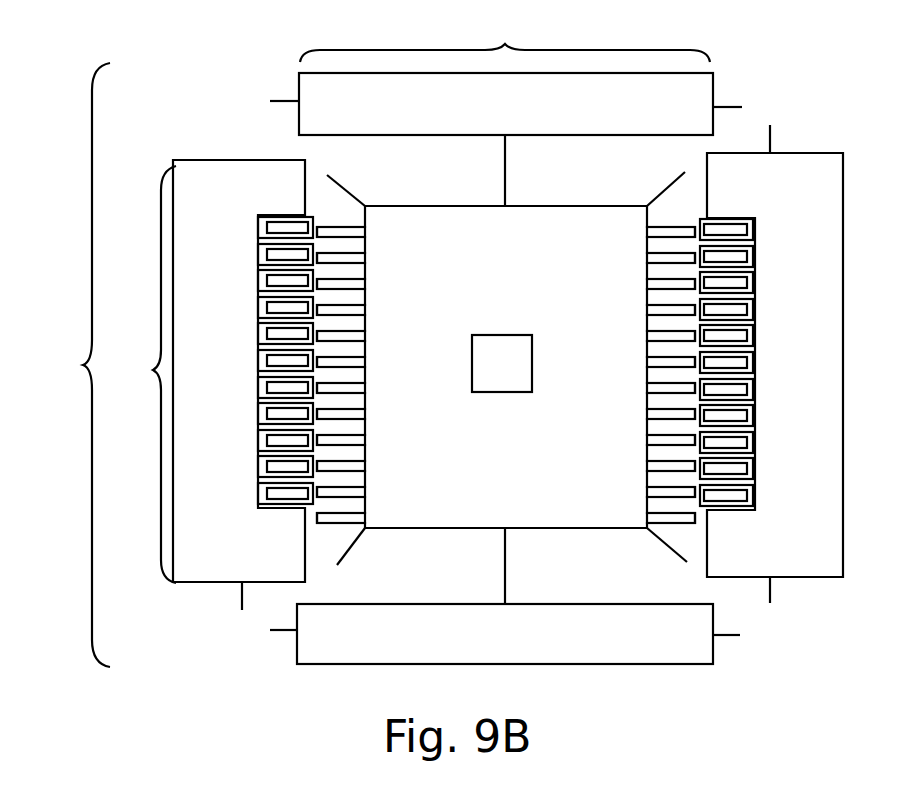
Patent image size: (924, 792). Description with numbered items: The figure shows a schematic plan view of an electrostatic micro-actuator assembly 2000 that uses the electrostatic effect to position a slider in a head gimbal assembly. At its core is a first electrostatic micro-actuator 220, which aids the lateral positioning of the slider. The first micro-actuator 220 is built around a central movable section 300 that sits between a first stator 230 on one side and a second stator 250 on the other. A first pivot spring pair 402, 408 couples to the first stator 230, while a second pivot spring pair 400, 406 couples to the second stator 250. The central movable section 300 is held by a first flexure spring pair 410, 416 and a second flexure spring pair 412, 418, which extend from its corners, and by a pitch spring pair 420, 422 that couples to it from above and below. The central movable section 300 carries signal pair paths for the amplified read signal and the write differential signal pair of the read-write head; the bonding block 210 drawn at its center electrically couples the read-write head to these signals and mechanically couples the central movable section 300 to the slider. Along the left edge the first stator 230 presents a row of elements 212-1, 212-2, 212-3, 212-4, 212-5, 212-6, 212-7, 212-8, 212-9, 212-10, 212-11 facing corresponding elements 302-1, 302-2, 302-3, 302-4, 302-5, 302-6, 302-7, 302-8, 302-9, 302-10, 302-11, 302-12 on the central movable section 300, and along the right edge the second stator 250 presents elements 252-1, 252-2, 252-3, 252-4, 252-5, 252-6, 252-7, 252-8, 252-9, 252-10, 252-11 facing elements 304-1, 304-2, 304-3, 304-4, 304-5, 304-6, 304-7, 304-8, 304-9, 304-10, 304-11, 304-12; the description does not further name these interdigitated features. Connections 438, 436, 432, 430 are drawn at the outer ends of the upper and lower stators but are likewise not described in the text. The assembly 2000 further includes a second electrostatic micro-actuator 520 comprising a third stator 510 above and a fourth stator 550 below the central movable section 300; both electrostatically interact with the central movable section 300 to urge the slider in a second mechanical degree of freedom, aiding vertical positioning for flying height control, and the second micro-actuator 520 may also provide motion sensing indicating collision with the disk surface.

The electrostatic micro-actuator assembly 2000 is at (67, 365).
The first electrostatic micro-actuator 220 is at (138, 374).
The first stator 230 is at (222, 184).
The second stator 250 is at (830, 177).
The central movable section 300 is at (523, 233).
The bonding block 210 is at (502, 363).
The third stator 510 is at (506, 104).
The fourth stator 550 is at (505, 634).
The second electrostatic micro-actuator 520 is at (505, 41).
The first pivot spring 408 is at (243, 160).
The second pivot spring 406 is at (770, 125).
The first pivot spring 402 is at (241, 598).
The second pivot spring 400 is at (770, 588).
The connection 438 is at (282, 101).
The connection 436 is at (727, 107).
The connection 432 is at (282, 630).
The connection 430 is at (723, 636).
The first flexure spring 416 is at (335, 180).
The second flexure spring 418 is at (665, 188).
The first flexure spring 410 is at (343, 557).
The second flexure spring 412 is at (666, 552).
The pitch spring 420 is at (505, 582).
The pitch spring 422 is at (505, 178).
The first substrate pad 212-1 is at (258, 238).
The first substrate pad 212-2 is at (258, 265).
The first substrate pad 212-3 is at (258, 291).
The first substrate pad 212-4 is at (258, 318).
The first substrate pad 212-5 is at (258, 344).
The first substrate pad 212-6 is at (258, 371).
The first substrate pad 212-7 is at (258, 398).
The first substrate pad 212-8 is at (258, 424).
The first substrate pad 212-9 is at (258, 451).
The first substrate pad 212-10 is at (258, 468).
The first substrate pad 212-11 is at (258, 494).
The second substrate pad 252-1 is at (753, 232).
The second substrate pad 252-2 is at (753, 259).
The second substrate pad 252-3 is at (753, 285).
The second substrate pad 252-4 is at (753, 312).
The second substrate pad 252-5 is at (753, 339).
The second substrate pad 252-6 is at (753, 366).
The second substrate pad 252-7 is at (753, 392).
The second substrate pad 252-8 is at (753, 419).
The second substrate pad 252-9 is at (753, 446).
The second substrate pad 252-10 is at (753, 472).
The second substrate pad 252-11 is at (753, 499).
The die left bond pad 302-1 is at (367, 233).
The die left bond pad 302-2 is at (367, 260).
The die left bond pad 302-3 is at (367, 287).
The die left bond pad 302-4 is at (367, 313).
The die left bond pad 302-5 is at (367, 339).
The die left bond pad 302-6 is at (367, 365).
The die left bond pad 302-7 is at (367, 391).
The die left bond pad 302-8 is at (367, 417).
The die left bond pad 302-9 is at (367, 443).
The die left bond pad 302-10 is at (367, 470).
The die left bond pad 302-11 is at (367, 497).
The die left bond pad 302-12 is at (371, 520).
The die right bond pad 304-1 is at (647, 236).
The die right bond pad 304-2 is at (647, 262).
The die right bond pad 304-3 is at (647, 288).
The die right bond pad 304-4 is at (647, 314).
The die right bond pad 304-5 is at (647, 340).
The die right bond pad 304-6 is at (647, 366).
The die right bond pad 304-7 is at (647, 392).
The die right bond pad 304-8 is at (647, 418).
The die right bond pad 304-9 is at (647, 444).
The die right bond pad 304-10 is at (647, 470).
The die right bond pad 304-11 is at (647, 497).
The die right bond pad 304-12 is at (647, 522).